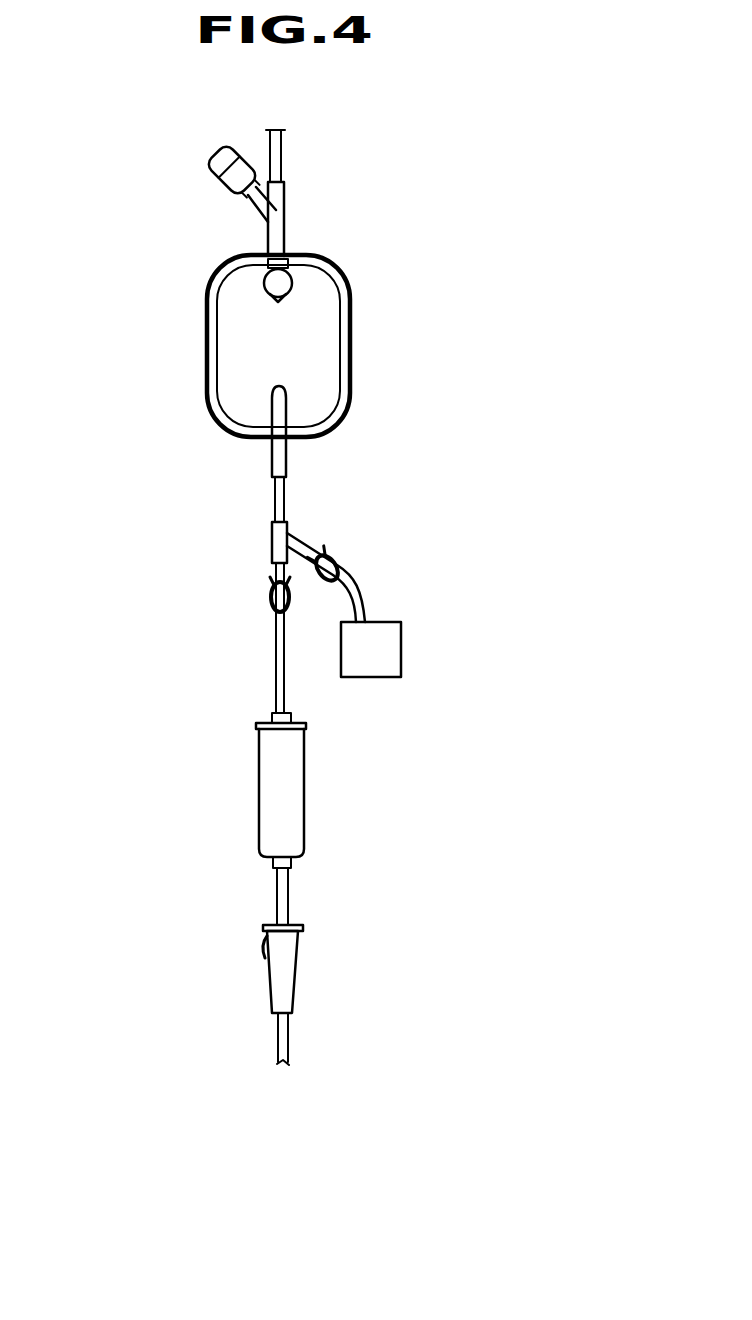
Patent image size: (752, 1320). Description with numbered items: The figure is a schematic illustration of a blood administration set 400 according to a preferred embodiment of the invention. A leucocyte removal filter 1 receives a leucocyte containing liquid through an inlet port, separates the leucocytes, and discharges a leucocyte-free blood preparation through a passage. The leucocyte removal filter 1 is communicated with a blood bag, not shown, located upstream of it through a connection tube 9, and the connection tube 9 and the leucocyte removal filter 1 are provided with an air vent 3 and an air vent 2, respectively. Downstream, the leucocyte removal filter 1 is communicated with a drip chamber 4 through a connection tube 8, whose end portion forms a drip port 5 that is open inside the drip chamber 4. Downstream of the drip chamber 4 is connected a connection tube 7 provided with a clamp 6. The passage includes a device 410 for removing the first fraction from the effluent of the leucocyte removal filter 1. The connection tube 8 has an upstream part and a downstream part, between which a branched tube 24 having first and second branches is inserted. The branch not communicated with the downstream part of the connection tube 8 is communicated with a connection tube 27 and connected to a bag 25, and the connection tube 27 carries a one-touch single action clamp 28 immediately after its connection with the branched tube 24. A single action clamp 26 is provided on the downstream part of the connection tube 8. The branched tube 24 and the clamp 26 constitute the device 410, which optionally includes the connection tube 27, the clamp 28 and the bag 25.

The leucocyte removal filter 1 is at (343, 353).
The air vent 2 is at (262, 270).
The air vent 3 is at (218, 160).
The drip chamber 4 is at (300, 818).
The drip port 5 is at (286, 742).
The clamp 6 is at (292, 985).
The connection tube 7 is at (288, 902).
The connection tube 8 is at (285, 492).
The connection tube 9 is at (296, 138).
The branched tube 24 is at (272, 545).
The bag 25 is at (397, 656).
The clamp 26 is at (270, 596).
The connection tube 27 is at (363, 585).
The clamp 28 is at (335, 555).
The blood administration set 400 is at (292, 1112).
The device for removing the first fraction 410 is at (176, 495).